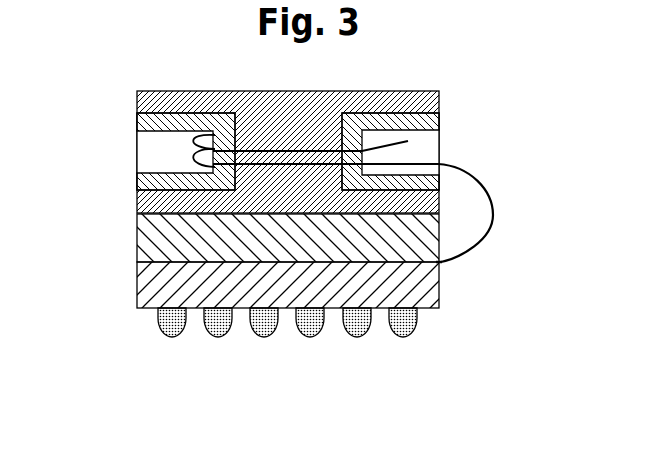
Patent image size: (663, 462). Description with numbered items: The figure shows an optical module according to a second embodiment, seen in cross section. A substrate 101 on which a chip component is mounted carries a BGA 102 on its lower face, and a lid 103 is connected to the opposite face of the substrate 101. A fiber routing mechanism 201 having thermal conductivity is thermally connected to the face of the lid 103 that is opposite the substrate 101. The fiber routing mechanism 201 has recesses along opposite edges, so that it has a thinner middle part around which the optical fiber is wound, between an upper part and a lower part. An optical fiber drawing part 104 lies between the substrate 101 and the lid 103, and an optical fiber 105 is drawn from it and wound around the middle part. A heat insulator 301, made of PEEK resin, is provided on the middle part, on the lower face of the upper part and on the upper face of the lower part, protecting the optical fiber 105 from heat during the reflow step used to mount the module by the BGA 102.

The fiber routing mechanism 201 is at (137, 91).
The heat insulator 301 is at (440, 120).
The lid 103 is at (137, 238).
The substrate 101 is at (137, 287).
The BGA 102 is at (158, 338).
The optical fiber drawing part 104 is at (441, 262).
The optical fiber 105 is at (490, 182).